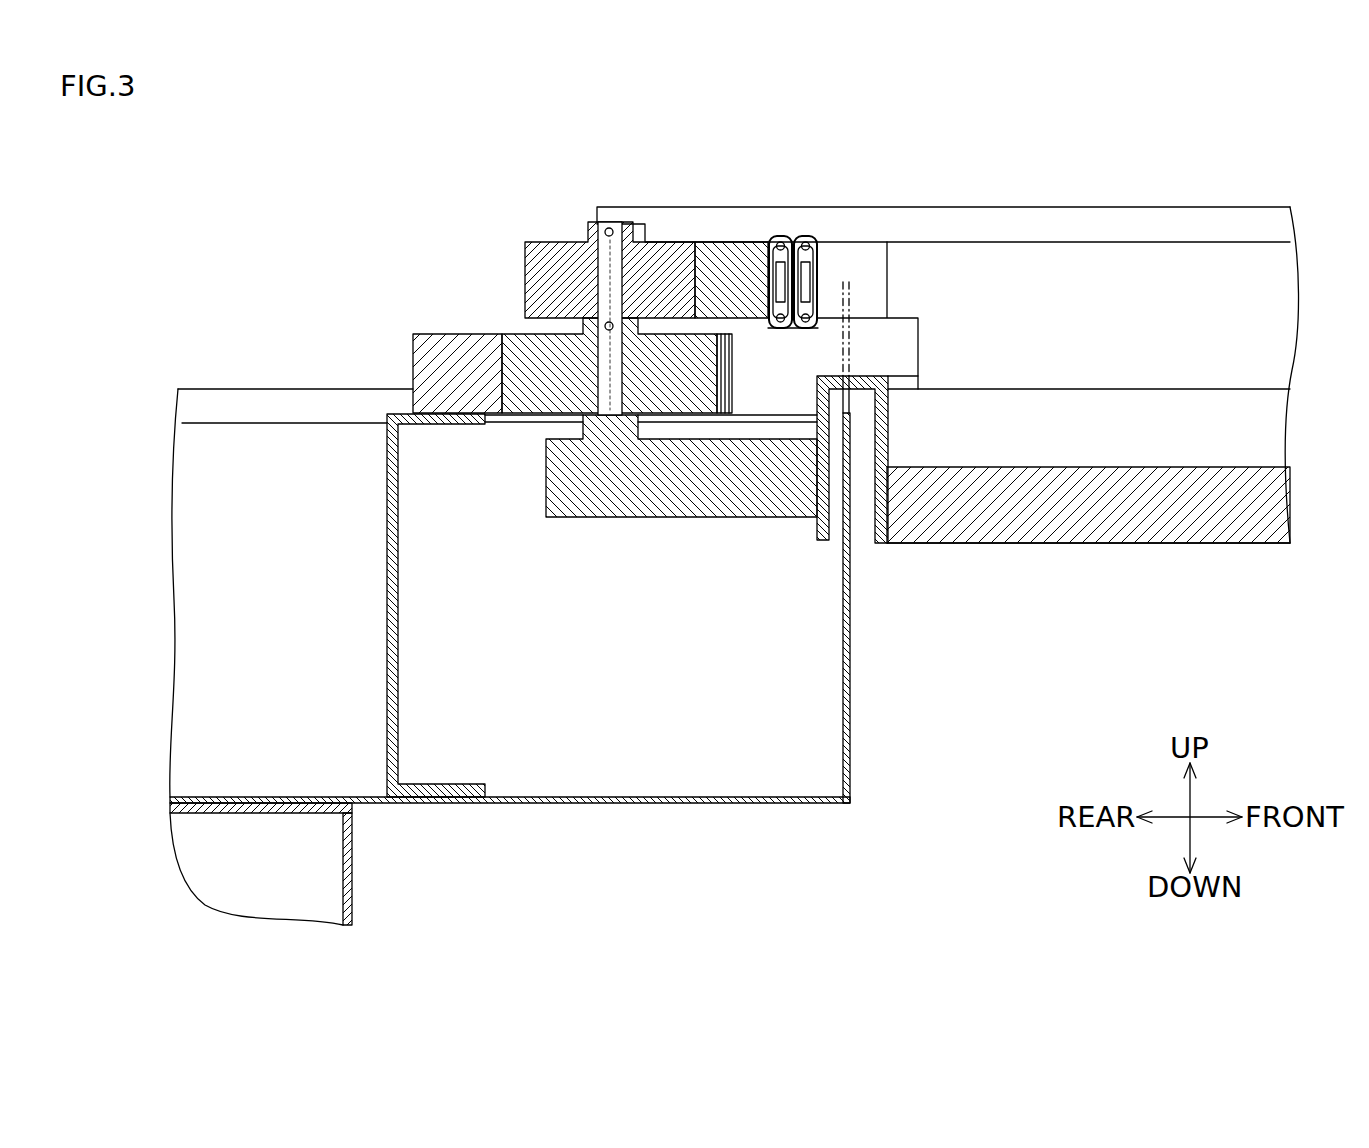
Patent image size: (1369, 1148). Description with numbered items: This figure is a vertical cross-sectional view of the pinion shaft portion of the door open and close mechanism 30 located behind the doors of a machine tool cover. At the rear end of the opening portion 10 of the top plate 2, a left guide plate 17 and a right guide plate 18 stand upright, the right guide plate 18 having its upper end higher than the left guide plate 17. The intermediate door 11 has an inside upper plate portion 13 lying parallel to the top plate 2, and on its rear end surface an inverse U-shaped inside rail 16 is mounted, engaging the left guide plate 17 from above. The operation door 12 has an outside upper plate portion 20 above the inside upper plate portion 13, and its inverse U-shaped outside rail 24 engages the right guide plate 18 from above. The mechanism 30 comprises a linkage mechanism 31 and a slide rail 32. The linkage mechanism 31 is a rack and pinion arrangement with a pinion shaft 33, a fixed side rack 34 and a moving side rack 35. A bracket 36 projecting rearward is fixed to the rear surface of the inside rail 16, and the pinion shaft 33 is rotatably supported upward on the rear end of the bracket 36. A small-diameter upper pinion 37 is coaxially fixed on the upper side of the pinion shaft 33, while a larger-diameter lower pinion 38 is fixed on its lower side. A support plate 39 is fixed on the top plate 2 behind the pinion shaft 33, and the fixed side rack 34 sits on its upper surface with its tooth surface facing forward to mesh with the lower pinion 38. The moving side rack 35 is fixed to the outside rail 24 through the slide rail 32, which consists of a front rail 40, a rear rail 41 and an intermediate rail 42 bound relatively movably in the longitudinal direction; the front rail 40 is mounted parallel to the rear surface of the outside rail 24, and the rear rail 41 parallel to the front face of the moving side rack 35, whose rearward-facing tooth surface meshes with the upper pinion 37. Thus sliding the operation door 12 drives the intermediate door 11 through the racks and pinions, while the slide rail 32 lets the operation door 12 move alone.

The top plate 2 is at (637, 797).
The opening portion 10 is at (1050, 718).
The intermediate door 11 is at (1239, 558).
The operation door 12 is at (1205, 229).
The inside upper plate portion 13 is at (1083, 545).
The inside rail 16 is at (877, 541).
The left guide plate 17 is at (836, 540).
The right guide plate 18 is at (857, 291).
The outside upper plate portion 20 is at (1090, 275).
The outside rail 24 is at (872, 265).
The door open and close mechanism 30 is at (591, 352).
The linkage mechanism 31 is at (556, 248).
The slide rail 32 is at (792, 215).
The pinion shaft 33 is at (612, 250).
The fixed side rack 34 is at (425, 357).
The moving side rack 35 is at (721, 262).
The bracket 36 is at (681, 512).
The upper pinion 37 is at (540, 250).
The lower pinion 38 is at (520, 396).
The support plate 39 is at (386, 601).
The front rail 40 is at (812, 242).
The rear rail 41 is at (778, 240).
The intermediate rail 42 is at (800, 330).